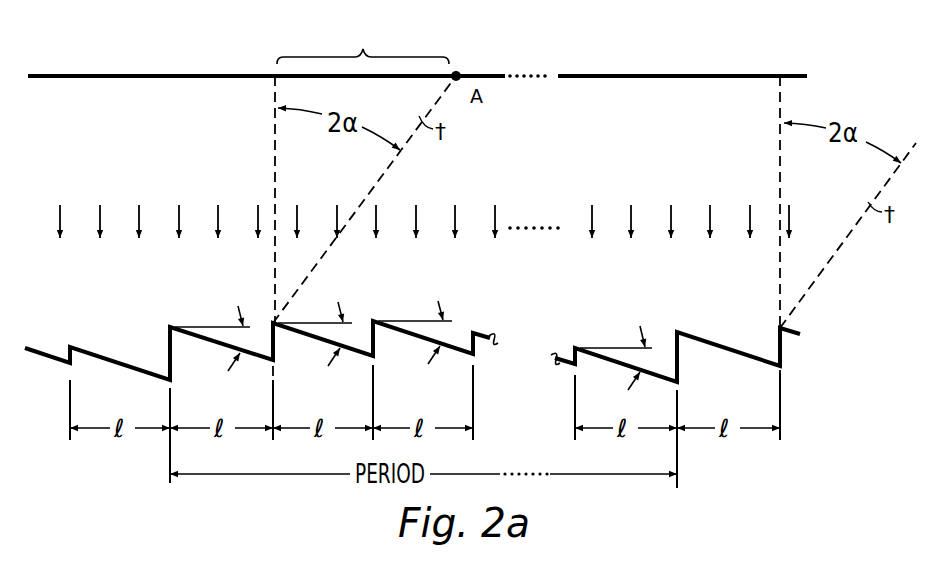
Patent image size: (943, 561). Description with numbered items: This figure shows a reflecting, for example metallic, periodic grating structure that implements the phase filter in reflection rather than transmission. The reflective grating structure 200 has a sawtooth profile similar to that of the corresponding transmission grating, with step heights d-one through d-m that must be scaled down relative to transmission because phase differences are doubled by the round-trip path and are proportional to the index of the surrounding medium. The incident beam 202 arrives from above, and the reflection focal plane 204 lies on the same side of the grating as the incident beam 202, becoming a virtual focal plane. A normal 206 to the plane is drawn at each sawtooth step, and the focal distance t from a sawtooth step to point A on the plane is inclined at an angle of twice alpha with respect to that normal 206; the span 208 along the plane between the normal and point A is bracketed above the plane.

The reflective grating structure 200 is at (109, 359).
The incident beam 202 is at (594, 202).
The reflection focal plane 204 is at (657, 76).
The normal line 206 is at (276, 153).
The span between normal and point A 208 is at (363, 39).